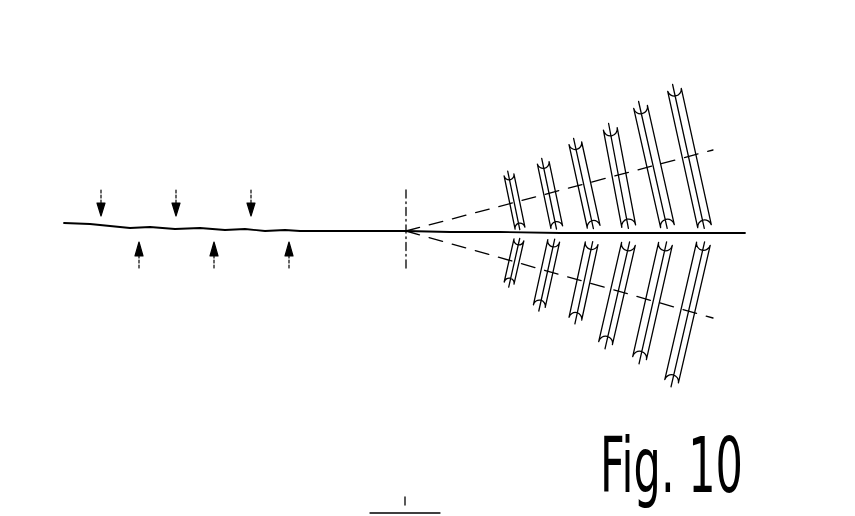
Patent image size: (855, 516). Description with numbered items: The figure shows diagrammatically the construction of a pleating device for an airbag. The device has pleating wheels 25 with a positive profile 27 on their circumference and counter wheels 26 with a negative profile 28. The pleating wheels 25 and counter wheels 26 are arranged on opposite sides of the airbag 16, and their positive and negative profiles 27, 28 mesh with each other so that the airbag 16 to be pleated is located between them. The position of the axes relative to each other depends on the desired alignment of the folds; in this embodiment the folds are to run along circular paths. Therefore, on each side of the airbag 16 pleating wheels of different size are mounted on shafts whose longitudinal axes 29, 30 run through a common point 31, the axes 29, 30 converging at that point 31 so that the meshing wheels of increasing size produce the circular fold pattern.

The airbag 16 is at (337, 231).
The point 31 is at (406, 231).
The longitudinal axis 29 is at (470, 213).
The longitudinal axis 30 is at (477, 251).
The positive profile 27 is at (530, 138).
The negative profile 28 is at (569, 120).
The pleating wheels 25 is at (670, 102).
The counter wheels 26 is at (712, 246).